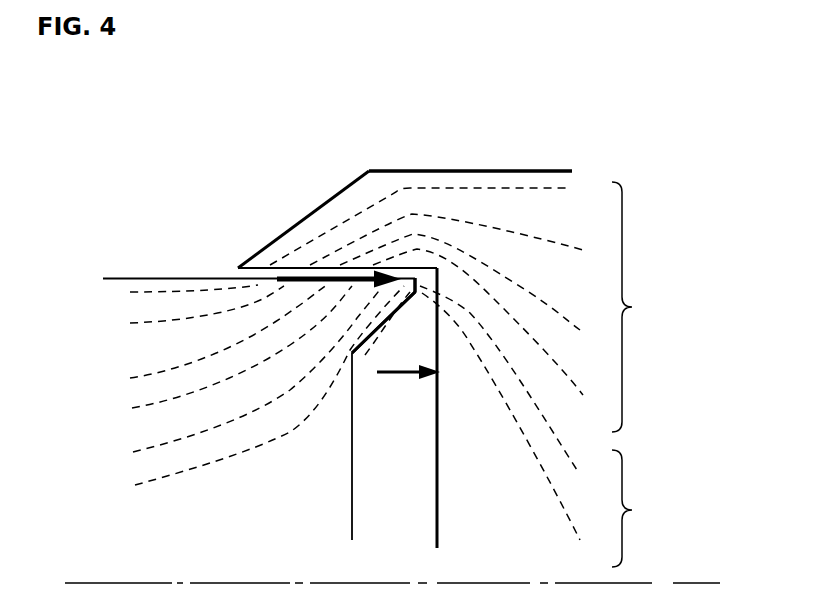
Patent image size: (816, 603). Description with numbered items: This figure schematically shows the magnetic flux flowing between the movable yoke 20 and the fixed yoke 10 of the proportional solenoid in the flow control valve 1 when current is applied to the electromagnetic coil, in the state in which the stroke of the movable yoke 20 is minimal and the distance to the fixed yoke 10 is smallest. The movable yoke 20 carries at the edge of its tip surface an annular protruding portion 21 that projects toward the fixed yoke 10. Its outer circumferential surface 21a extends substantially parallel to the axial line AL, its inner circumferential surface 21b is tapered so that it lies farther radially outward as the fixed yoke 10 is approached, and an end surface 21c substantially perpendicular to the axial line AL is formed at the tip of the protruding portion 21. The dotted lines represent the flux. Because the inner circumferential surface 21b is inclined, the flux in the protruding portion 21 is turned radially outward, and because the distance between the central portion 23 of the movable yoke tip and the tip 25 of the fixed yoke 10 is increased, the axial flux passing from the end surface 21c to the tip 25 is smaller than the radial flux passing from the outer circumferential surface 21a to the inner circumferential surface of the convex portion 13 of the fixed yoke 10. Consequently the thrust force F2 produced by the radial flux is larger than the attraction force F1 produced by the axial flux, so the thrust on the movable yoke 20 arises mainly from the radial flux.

The flow control valve 1 is at (177, 101).
The fixed yoke 10 is at (470, 167).
The convex portion 13 is at (327, 198).
The movable yoke 20 is at (127, 272).
The protruding portion 21 is at (408, 313).
The outer circumferential surface 21a is at (406, 280).
The inner circumferential surface 21b is at (366, 343).
The end surface 21c is at (417, 286).
The central portion 23 is at (352, 520).
The tip 25 is at (437, 480).
The thrust force F1 is at (403, 374).
The thrust force F2 is at (304, 278).
The axial line AL is at (660, 583).